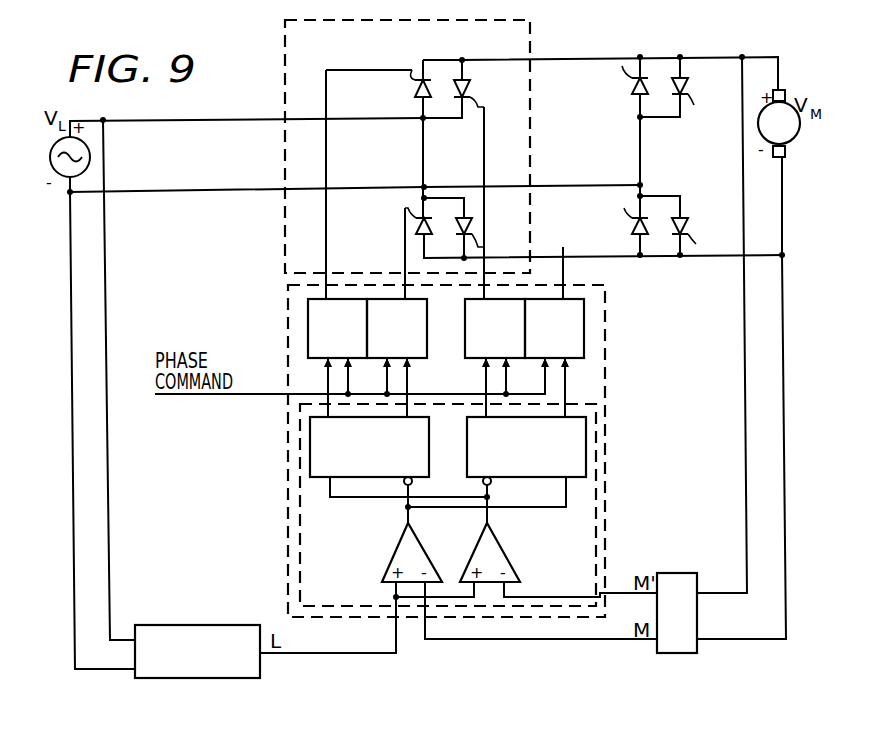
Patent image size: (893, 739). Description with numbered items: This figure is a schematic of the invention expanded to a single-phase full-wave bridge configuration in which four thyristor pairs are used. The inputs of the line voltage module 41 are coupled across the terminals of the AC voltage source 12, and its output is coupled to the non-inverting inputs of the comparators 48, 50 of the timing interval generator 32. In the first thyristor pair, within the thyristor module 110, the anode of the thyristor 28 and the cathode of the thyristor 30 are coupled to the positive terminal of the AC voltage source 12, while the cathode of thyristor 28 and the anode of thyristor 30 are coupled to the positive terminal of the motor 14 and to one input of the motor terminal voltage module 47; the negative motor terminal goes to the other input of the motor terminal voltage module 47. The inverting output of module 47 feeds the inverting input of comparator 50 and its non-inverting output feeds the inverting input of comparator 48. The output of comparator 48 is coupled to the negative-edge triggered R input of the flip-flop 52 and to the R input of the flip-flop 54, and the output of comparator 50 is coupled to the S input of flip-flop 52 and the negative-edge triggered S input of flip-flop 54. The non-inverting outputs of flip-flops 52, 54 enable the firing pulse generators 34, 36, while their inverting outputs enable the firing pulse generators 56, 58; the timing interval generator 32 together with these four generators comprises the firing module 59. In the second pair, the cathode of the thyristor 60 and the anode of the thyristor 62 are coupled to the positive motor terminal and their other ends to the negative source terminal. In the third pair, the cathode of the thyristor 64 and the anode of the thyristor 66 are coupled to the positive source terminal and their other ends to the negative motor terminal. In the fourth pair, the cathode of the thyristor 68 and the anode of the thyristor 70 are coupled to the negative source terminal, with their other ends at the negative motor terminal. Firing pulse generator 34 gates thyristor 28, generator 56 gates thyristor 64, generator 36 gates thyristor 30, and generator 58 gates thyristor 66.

The thyristor module 110 is at (285, 65).
The AC voltage source 12 is at (91, 155).
The motor 14 is at (790, 138).
The thyristor 28 is at (417, 80).
The thyristor 30 is at (468, 80).
The thyristor 60 is at (634, 78).
The thyristor 62 is at (686, 78).
The thyristor 64 is at (418, 226).
The thyristor 66 is at (470, 226).
The thyristor 68 is at (634, 228).
The thyristor 70 is at (686, 220).
The firing module 59 is at (460, 318).
The firing pulse generator 34 is at (348, 349).
The firing pulse generator 56 is at (408, 349).
The firing pulse generator 36 is at (506, 349).
The firing pulse generator 58 is at (565, 349).
The timing interval generator 32 is at (355, 552).
The flip-flop 52 is at (378, 459).
The flip-flop 54 is at (538, 459).
The comparator 48 is at (420, 566).
The comparator 50 is at (499, 566).
The motor terminal voltage module 47 is at (690, 626).
The line voltage module 41 is at (209, 664).